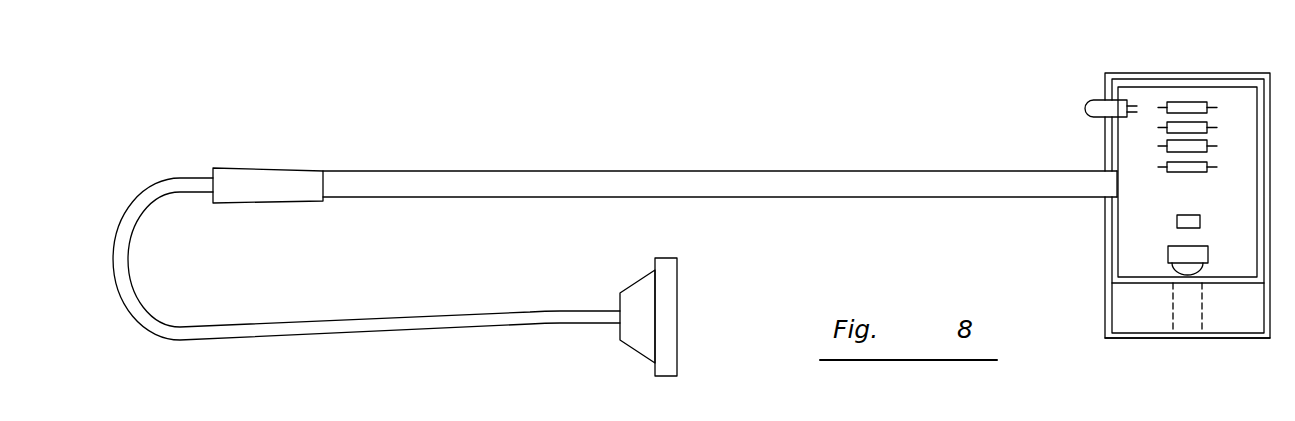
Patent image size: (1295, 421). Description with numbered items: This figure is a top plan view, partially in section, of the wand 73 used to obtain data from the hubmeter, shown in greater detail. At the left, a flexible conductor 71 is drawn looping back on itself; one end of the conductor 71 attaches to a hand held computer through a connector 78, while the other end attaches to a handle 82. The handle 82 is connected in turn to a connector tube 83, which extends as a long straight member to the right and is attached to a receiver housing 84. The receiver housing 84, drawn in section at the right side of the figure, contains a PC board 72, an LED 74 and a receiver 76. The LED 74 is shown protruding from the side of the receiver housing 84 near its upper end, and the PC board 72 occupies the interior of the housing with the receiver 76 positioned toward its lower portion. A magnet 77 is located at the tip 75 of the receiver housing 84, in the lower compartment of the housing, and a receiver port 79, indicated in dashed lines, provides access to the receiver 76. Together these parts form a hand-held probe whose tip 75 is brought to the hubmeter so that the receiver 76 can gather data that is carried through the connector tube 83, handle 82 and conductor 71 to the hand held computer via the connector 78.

The conductor 71 is at (492, 317).
The PC board 72 is at (1105, 142).
The wand 73 is at (457, 162).
The LED 74 is at (1102, 100).
The tip 75 is at (1225, 340).
The receiver 76 is at (1168, 260).
The magnet 77 is at (1133, 305).
The connector 78 is at (677, 287).
The receiver port 79 is at (1178, 312).
The handle 82 is at (248, 172).
The connector tube 83 is at (745, 172).
The receiver housing 84 is at (1232, 72).